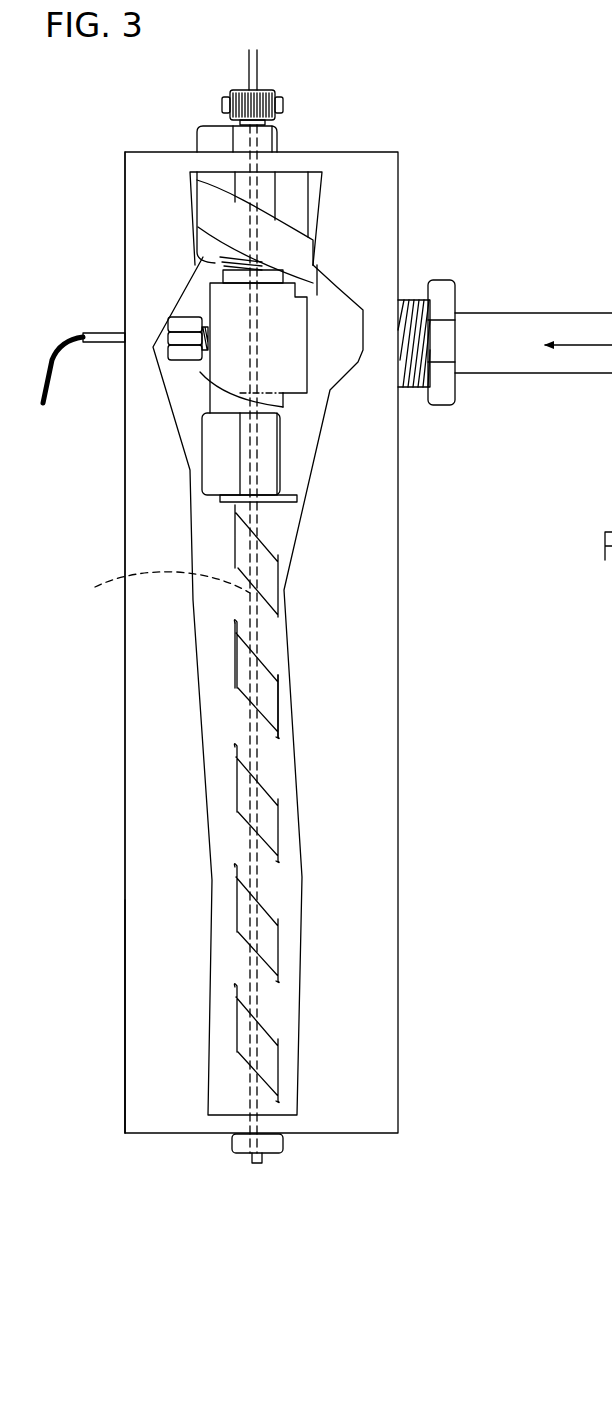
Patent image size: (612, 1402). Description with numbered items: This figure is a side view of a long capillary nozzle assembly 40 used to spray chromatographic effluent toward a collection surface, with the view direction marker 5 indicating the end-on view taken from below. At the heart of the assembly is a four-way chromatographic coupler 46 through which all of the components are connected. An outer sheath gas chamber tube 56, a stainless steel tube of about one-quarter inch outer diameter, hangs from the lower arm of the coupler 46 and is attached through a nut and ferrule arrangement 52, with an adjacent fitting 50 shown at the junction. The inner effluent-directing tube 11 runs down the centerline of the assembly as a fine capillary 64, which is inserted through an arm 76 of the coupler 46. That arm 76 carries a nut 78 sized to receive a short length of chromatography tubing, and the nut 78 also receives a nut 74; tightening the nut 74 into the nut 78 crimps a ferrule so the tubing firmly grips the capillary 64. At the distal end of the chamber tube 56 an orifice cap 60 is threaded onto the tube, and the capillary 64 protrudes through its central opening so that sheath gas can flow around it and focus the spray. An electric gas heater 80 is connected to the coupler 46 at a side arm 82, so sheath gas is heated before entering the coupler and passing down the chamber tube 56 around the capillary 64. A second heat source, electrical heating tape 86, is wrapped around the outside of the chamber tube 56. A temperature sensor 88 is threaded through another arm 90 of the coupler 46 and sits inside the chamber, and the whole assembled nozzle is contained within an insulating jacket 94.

The view direction arrow 5 is at (247, 1170).
The chromatographic effluent-directing tube 11 is at (401, 782).
The nozzle assembly 40 is at (121, 740).
The chromatographic coupler 46 is at (243, 302).
The guide member 50 is at (289, 412).
The nut and ferrule arrangement 52 is at (293, 480).
The chamber tube 56 is at (274, 537).
The orifice cap 60 is at (232, 1149).
The capillary 64 is at (158, 589).
The nut 74 is at (230, 94).
The arm 76 is at (203, 268).
The nut 78 is at (220, 180).
The gas heater 80 is at (489, 301).
The side arm 82 is at (407, 302).
The heating tape 86 is at (270, 690).
The temperature sensor 88 is at (57, 370).
The arm 90 is at (196, 369).
The insulating jacket 94 is at (126, 1003).